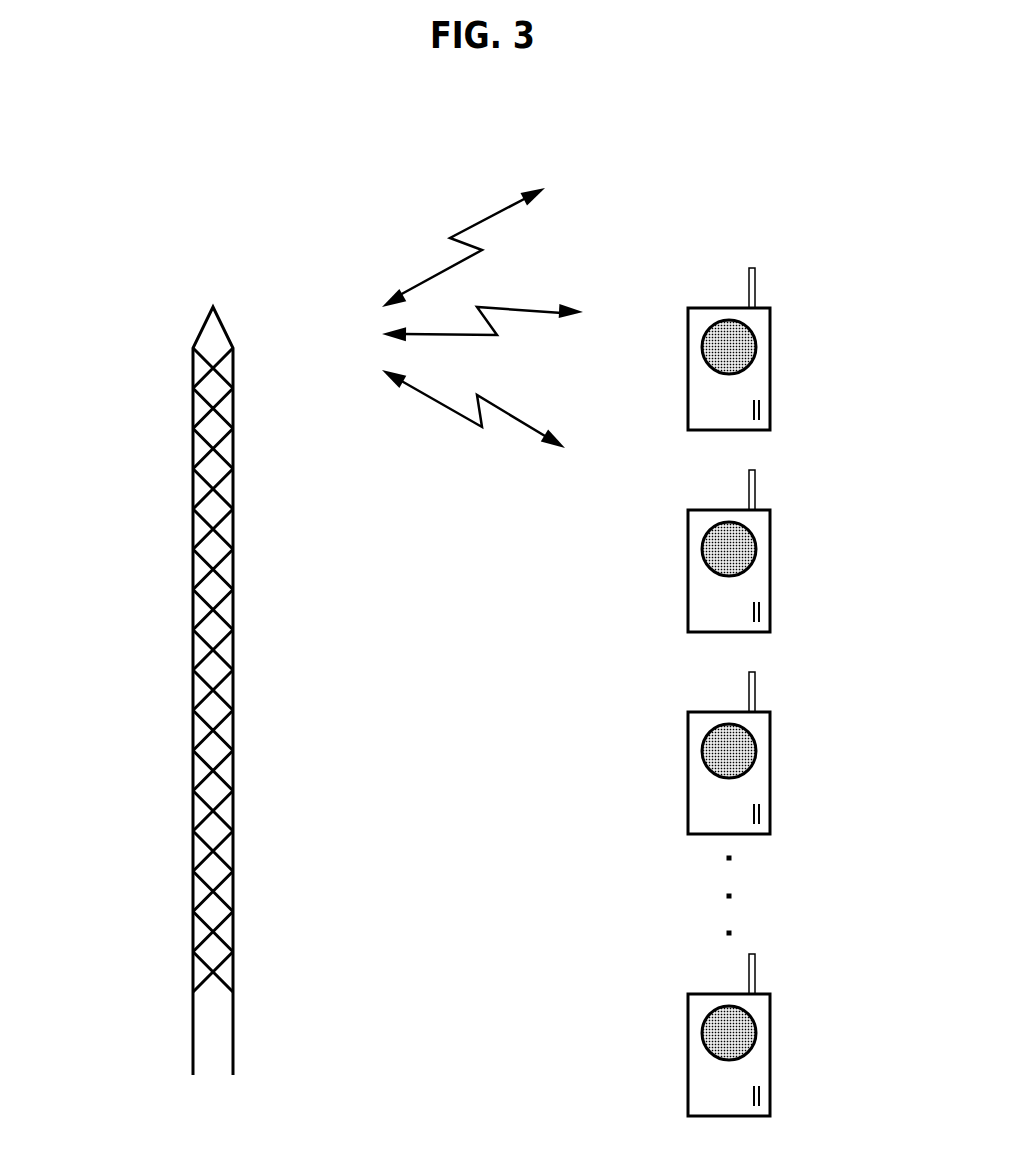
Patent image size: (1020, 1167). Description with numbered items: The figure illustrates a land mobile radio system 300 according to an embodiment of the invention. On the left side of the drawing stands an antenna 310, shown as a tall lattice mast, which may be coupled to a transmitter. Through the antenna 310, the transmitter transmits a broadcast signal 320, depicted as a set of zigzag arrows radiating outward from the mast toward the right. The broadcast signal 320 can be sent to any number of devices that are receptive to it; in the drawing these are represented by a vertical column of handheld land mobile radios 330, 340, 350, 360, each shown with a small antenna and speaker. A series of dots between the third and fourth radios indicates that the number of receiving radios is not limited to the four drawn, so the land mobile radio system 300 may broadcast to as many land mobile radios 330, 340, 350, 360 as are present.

The land mobile radio system 300 is at (486, 1107).
The antenna 310 is at (193, 630).
The broadcast signal 320 is at (365, 359).
The land mobile radio 330 is at (770, 348).
The land mobile radio 340 is at (770, 550).
The land mobile radio 350 is at (770, 752).
The land mobile radio 360 is at (770, 1034).